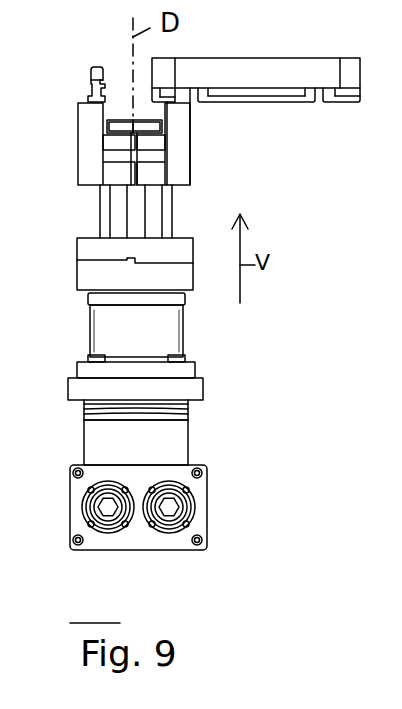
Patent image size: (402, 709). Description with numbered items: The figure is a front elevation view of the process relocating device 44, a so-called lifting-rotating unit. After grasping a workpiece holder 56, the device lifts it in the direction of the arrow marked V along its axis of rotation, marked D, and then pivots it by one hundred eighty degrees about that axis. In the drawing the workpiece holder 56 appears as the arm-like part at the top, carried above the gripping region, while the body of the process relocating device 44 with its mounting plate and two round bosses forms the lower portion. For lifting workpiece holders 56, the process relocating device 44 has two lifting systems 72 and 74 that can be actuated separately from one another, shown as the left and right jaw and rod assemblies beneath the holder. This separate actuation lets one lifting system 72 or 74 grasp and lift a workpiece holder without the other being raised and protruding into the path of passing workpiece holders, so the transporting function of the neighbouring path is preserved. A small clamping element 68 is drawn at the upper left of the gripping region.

The process relocating device 44 is at (173, 447).
The workpiece holder 56 is at (262, 80).
The clamp screw 68 is at (93, 82).
The lifting system 72 is at (118, 211).
The lifting system 74 is at (155, 207).